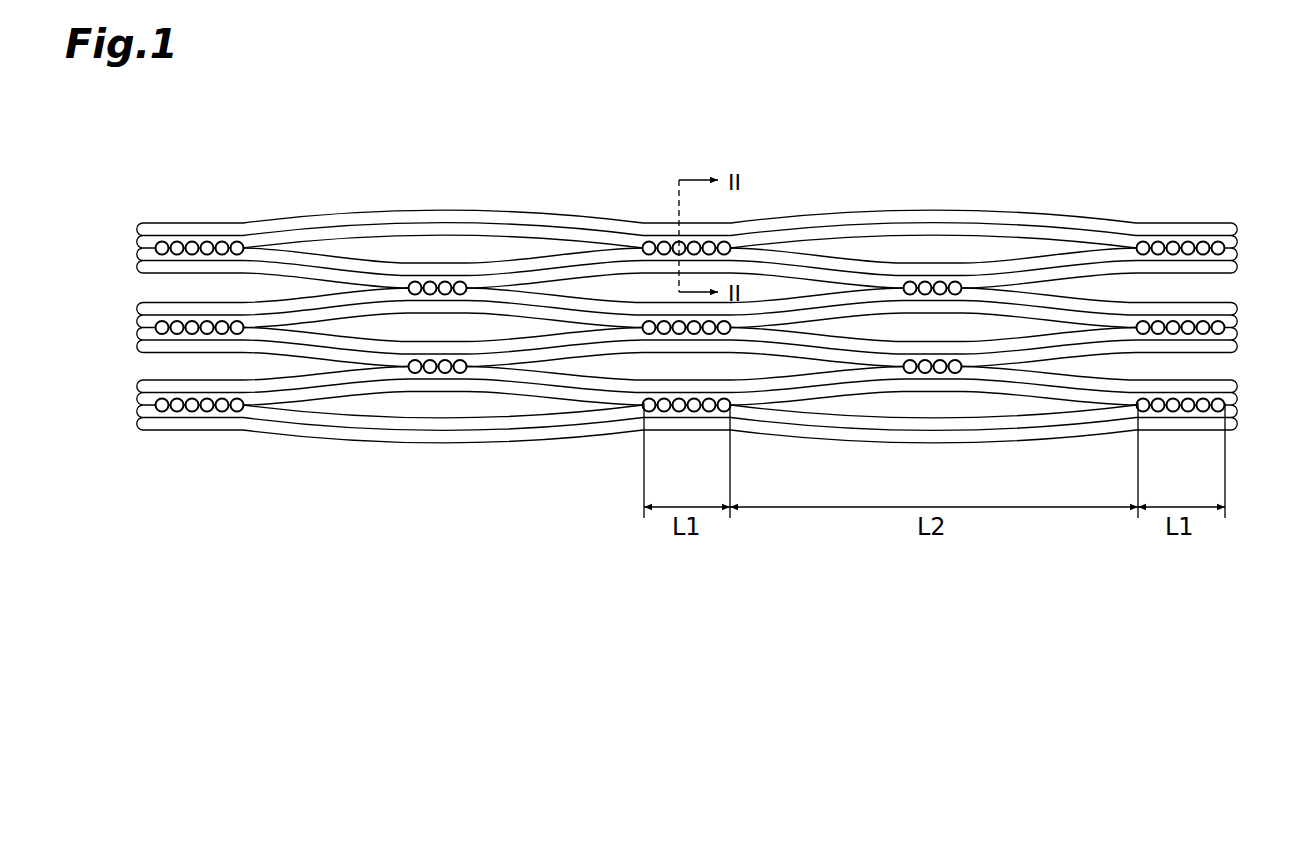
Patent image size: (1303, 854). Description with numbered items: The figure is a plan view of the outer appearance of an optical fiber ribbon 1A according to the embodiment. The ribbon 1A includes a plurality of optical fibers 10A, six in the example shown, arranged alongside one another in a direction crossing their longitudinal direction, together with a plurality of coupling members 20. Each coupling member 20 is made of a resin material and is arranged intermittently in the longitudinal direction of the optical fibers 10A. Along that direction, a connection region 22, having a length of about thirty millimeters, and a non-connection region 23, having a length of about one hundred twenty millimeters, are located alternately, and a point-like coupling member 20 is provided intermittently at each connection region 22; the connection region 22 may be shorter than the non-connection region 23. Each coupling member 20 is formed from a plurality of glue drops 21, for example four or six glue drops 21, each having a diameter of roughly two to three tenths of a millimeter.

The optical fiber ribbon 1A is at (692, 320).
The optical fiber 10A is at (299, 328).
The coupling member 20 is at (229, 188).
The glue drop 21 is at (176, 242).
The connection region 22 is at (700, 389).
The non-connection region 23 is at (1060, 379).